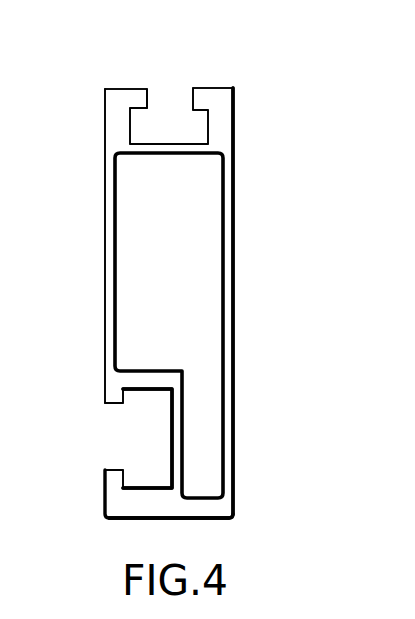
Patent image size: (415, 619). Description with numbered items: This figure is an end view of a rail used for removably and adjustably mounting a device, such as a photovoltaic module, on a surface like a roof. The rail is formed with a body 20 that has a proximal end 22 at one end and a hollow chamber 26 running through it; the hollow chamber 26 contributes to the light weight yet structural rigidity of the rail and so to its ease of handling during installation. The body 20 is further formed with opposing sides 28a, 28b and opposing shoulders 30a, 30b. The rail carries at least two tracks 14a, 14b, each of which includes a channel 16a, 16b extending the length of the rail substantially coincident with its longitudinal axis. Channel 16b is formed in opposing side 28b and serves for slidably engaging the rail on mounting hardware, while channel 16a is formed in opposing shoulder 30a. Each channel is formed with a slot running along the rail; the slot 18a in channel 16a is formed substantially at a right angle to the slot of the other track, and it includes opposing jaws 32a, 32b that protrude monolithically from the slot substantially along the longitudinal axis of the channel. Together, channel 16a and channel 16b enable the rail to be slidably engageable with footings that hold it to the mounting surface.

The body 20 is at (234, 267).
The proximal end 22 is at (223, 508).
The hollow chamber 26 is at (178, 203).
The opposing side 28a is at (233, 405).
The opposing side 28b is at (105, 272).
The opposing shoulder 30a is at (230, 87).
The opposing shoulder 30b is at (128, 523).
The opposing jaw 32a is at (132, 102).
The opposing jaw 32b is at (200, 102).
The track 14a is at (175, 87).
The track 14b is at (107, 435).
The channel 16a is at (163, 142).
The channel 16b is at (140, 447).
The slot 18a is at (148, 95).